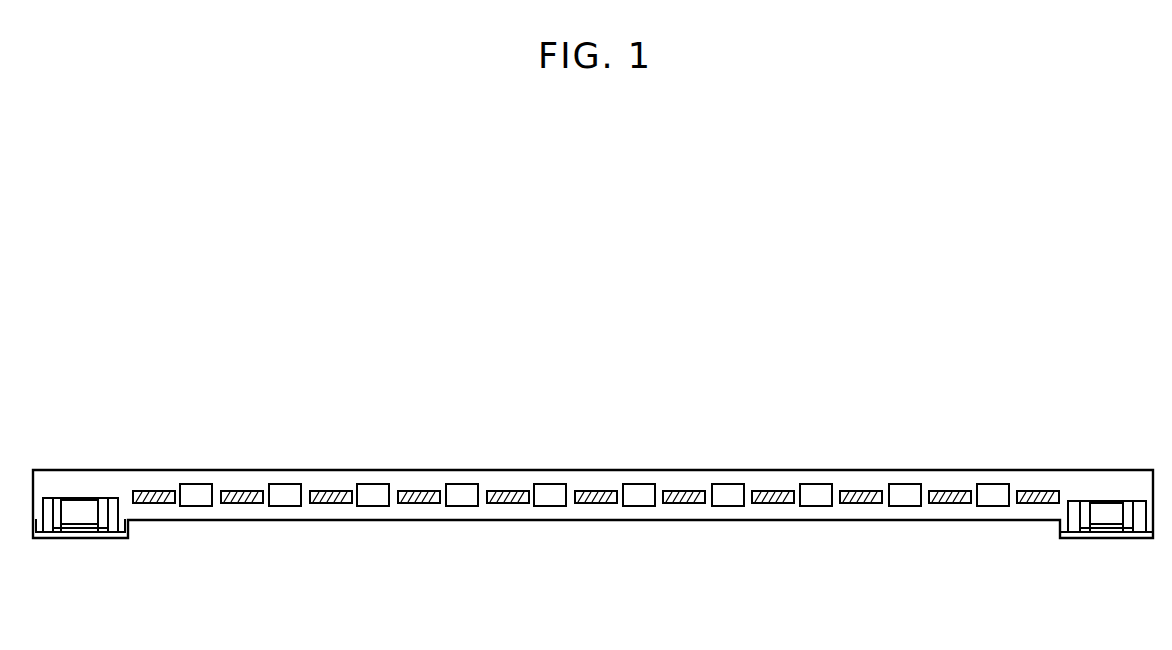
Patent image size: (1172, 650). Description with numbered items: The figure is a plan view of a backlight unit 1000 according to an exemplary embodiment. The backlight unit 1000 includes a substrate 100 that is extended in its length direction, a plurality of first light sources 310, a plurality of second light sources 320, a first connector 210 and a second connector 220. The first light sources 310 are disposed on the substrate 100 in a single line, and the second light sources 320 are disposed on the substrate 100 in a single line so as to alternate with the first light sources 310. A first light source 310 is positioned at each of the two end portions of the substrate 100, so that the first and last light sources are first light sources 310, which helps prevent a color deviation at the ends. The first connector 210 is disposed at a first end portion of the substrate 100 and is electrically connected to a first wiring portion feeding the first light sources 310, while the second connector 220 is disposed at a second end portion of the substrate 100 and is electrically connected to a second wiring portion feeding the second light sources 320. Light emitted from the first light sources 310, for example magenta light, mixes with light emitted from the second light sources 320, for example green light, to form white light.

The backlight unit 1000 is at (593, 311).
The substrate 100 is at (397, 512).
The first connector 210 is at (55, 528).
The second connector 220 is at (1108, 536).
The first light source 310 is at (149, 491).
The second light source 320 is at (195, 491).